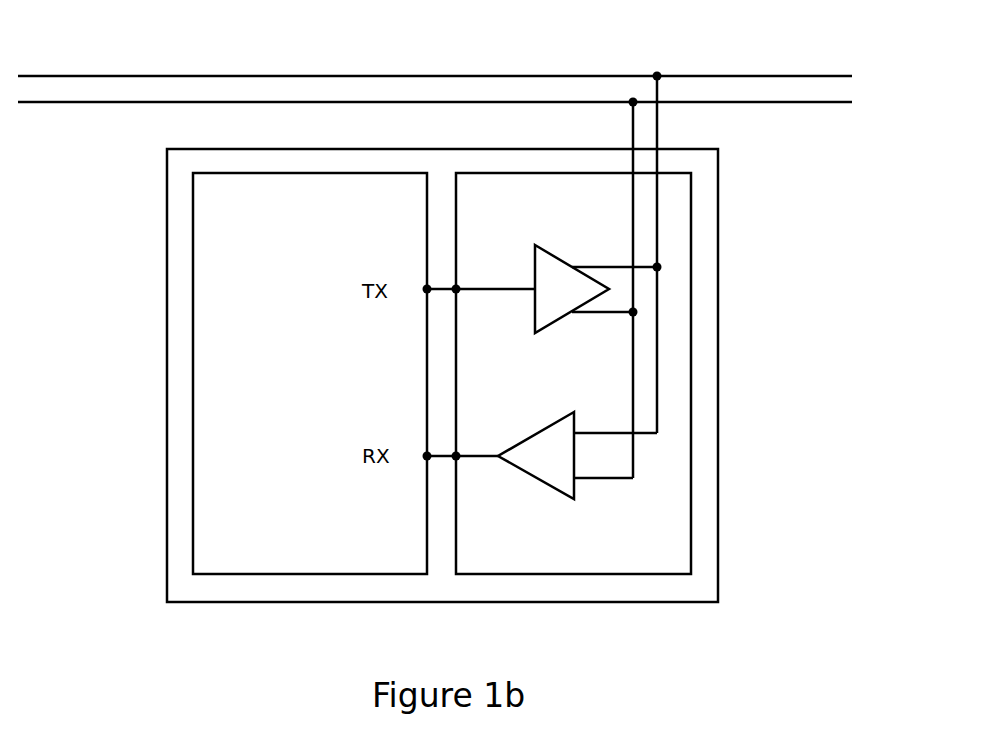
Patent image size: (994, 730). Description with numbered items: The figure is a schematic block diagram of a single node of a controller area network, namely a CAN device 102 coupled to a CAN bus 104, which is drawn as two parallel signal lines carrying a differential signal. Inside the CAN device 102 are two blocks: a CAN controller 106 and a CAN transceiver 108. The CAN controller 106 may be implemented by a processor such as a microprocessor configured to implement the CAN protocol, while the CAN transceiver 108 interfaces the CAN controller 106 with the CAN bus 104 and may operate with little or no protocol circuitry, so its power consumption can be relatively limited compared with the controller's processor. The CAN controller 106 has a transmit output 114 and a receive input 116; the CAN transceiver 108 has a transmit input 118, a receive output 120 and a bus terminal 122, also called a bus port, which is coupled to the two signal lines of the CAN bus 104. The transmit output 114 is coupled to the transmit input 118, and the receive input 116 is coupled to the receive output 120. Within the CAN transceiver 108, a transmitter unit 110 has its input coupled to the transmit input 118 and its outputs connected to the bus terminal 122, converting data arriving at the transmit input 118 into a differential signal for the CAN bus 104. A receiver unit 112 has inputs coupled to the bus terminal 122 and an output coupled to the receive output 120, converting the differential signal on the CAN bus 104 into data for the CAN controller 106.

The CAN device 102 is at (167, 272).
The CAN bus 104 is at (183, 67).
The CAN controller 106 is at (310, 373).
The CAN transceiver 108 is at (638, 575).
The transmitter unit 110 is at (567, 262).
The receiver unit 112 is at (573, 488).
The transmit output 114 is at (427, 289).
The receive input 116 is at (427, 456).
The transmit input 118 is at (456, 289).
The receive output 120 is at (456, 456).
The bus terminal 122 is at (668, 162).